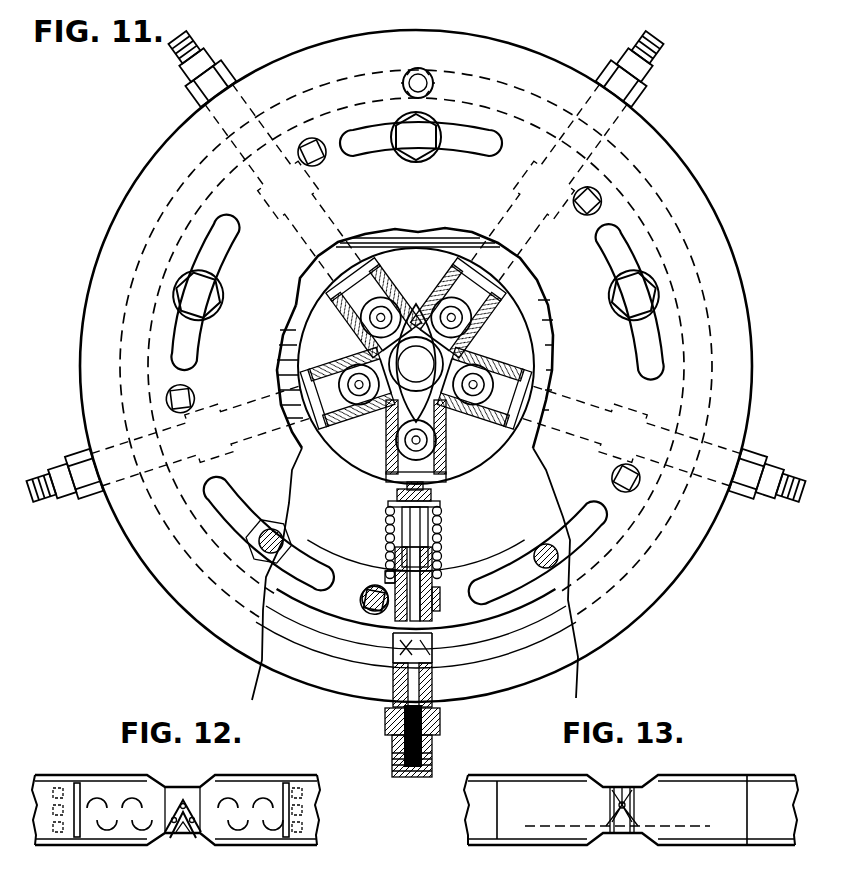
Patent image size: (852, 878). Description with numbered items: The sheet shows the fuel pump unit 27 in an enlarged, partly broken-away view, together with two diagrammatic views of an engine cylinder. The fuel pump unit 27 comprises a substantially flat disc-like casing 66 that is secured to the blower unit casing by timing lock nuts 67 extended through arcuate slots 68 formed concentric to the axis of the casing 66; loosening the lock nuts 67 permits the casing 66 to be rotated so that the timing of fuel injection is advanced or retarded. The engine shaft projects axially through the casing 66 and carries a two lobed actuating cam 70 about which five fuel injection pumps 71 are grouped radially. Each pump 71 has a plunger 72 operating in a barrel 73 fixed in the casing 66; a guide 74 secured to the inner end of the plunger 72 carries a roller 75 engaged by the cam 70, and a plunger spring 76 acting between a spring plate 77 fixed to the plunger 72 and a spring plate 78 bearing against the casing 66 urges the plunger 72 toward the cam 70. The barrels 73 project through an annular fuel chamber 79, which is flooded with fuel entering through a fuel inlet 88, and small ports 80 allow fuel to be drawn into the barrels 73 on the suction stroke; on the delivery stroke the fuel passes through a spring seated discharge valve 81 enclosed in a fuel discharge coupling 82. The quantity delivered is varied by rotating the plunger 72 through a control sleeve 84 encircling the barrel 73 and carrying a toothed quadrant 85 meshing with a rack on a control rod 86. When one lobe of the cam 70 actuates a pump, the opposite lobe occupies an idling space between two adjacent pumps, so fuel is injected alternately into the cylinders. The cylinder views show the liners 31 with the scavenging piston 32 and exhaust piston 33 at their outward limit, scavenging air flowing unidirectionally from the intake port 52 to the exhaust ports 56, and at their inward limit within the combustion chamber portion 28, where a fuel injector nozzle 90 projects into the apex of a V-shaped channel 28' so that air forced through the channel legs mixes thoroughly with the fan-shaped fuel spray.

In FIG. 11, the fuel pump unit 27 is at (704, 186).
In FIG. 11, the casing 66 is at (170, 165).
In FIG. 11, the timing lock nuts 67 is at (184, 283).
In FIG. 11, the arcuate slots 68 is at (466, 150).
In FIG. 11, the actuating cam 70 is at (482, 345).
In FIG. 11, the fuel injection pumps 71 is at (198, 76).
In FIG. 11, the plunger 72 is at (410, 607).
In FIG. 11, the barrel 73 is at (430, 625).
In FIG. 11, the guide 74 is at (388, 444).
In FIG. 11, the roller 75 is at (444, 444).
In FIG. 11, the plunger spring 76 is at (444, 535).
In FIG. 11, the spring plate 77 is at (396, 495).
In FIG. 11, the spring plate 78 is at (384, 571).
In FIG. 11, the annular fuel chamber 79 is at (550, 620).
In FIG. 11, the ports 80 is at (433, 650).
In FIG. 11, the discharge valve 81 is at (441, 720).
In FIG. 11, the fuel discharge coupling 82 is at (386, 718).
In FIG. 11, the control sleeve 84 is at (440, 582).
In FIG. 11, the toothed quadrant 85 is at (441, 599).
In FIG. 11, the control rod 86 is at (308, 141).
In FIG. 11, the fuel inlet 88 is at (432, 80).
In FIG. 12, the liner 31 is at (122, 775).
In FIG. 13, the liner 31 is at (480, 776).
In FIG. 12, the scavenging piston 32 is at (40, 790).
In FIG. 13, the scavenging piston 32 is at (525, 790).
In FIG. 12, the exhaust piston 33 is at (318, 808).
In FIG. 13, the exhaust piston 33 is at (698, 790).
In FIG. 12, the scavenging air intake port 52 is at (66, 778).
In FIG. 13, the scavenging air intake port 52 is at (500, 776).
In FIG. 12, the exhaust ports 56 is at (296, 845).
In FIG. 13, the exhaust ports 56 is at (748, 774).
In FIG. 12, the fuel injector nozzle 90 is at (183, 798).
In FIG. 12, the V-shaped channel 28' is at (174, 847).
In FIG. 13, the combustion chamber portion 28 is at (622, 791).